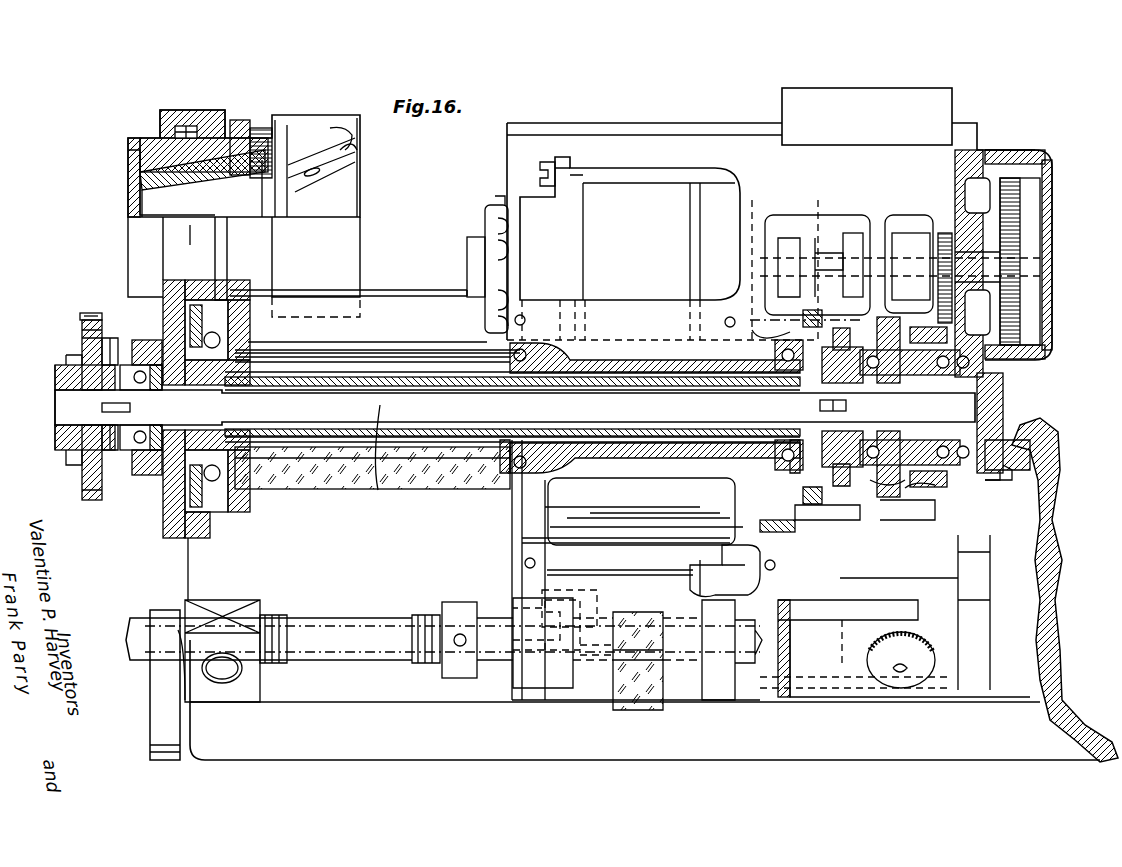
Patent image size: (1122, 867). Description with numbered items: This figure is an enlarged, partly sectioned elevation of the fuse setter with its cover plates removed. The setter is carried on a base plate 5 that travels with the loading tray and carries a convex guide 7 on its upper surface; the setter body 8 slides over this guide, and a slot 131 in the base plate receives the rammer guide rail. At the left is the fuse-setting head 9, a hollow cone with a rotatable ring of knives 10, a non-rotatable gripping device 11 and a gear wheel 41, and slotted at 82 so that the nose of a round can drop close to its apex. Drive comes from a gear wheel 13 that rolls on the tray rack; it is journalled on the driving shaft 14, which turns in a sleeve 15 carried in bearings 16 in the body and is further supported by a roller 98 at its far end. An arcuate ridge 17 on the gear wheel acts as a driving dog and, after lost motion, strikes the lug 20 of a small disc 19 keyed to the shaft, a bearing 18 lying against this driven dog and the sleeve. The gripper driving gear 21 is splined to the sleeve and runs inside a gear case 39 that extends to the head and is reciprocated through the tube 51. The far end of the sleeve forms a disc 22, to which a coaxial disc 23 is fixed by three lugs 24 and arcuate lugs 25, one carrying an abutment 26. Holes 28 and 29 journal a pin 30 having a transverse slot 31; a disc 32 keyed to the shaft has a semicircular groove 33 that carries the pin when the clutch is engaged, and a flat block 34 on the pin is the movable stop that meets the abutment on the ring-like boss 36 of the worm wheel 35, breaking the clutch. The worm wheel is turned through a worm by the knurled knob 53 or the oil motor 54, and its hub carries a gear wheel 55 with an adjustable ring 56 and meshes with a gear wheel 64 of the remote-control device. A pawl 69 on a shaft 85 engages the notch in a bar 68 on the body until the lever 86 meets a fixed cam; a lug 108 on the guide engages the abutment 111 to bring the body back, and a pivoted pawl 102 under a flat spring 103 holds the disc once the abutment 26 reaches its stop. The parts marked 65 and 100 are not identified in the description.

The base plate 5 is at (1020, 605).
The convex guide 7 is at (635, 338).
The slide or body 8 is at (600, 340).
The fuse-setting head 9 is at (113, 205).
The rotatable gripping device or ring of knives 10 is at (255, 160).
The non-rotatable gripping device 11 is at (336, 140).
The gear wheel 13 is at (89, 312).
The driving shaft 14 is at (298, 412).
The sleeve 15 is at (395, 470).
The bearings 16 is at (503, 476).
The arcuate ridge 17 is at (118, 335).
The bearing 18 is at (156, 470).
The small disc 19 is at (135, 345).
The projecting lug 20 is at (98, 500).
The gripper driving gear 21 is at (175, 500).
The disc 22 is at (806, 310).
The coaxial disc 23 is at (858, 300).
The lugs 24 is at (840, 500).
The arcuate lugs 25 is at (820, 410).
The abutment 26 is at (836, 530).
The hole 28 is at (765, 328).
The hole 29 is at (882, 318).
The cylindrical pin 30 is at (839, 269).
The transverse slot 31 is at (814, 265).
The disc 32 is at (893, 410).
The semicircular groove 33 is at (875, 490).
The flat block 34 is at (895, 325).
The worm wheel 35 is at (915, 488).
The ring-like boss 36 is at (900, 508).
The gear case 39 is at (215, 300).
The gear wheel 41 is at (200, 112).
The tube 51 is at (430, 295).
The knurled knob 53 is at (885, 650).
The oil-pressure driven motor 54 is at (940, 602).
The gear wheel 55 is at (1008, 352).
The ring 56 is at (940, 298).
The gear wheel 64 is at (900, 263).
The motor 65 is at (715, 215).
The bar 68 is at (740, 545).
The pawl 69 is at (700, 562).
The slot 82 is at (297, 113).
The shaft 85 is at (492, 648).
The lever or wiper 86 is at (160, 716).
The roller 98 is at (70, 450).
The key 100 is at (474, 399).
The pivoted pawl 102 is at (818, 522).
The flat spring 103 is at (770, 518).
The lug 108 is at (595, 603).
The abutment 111 is at (530, 617).
The slot 131 is at (370, 472).